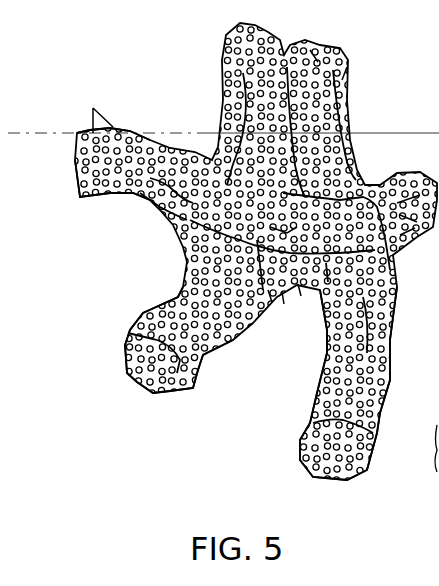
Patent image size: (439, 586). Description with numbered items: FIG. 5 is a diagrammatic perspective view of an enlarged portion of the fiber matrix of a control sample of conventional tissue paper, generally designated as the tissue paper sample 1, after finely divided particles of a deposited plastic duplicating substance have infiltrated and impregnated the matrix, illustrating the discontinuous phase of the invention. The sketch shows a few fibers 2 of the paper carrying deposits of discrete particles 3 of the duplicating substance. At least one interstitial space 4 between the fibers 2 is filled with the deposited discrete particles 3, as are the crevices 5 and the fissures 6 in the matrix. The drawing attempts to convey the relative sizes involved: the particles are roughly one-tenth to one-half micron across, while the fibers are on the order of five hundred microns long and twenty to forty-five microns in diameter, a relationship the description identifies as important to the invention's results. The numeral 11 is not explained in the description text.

The tissue paper sample 1 is at (150, 90).
The fibers 2 is at (85, 197).
The discrete particles 3 is at (93, 108).
The interstitial space 4 is at (282, 243).
The crevices 5 is at (385, 305).
The fissures 6 is at (192, 152).
The element 11 is at (438, 477).